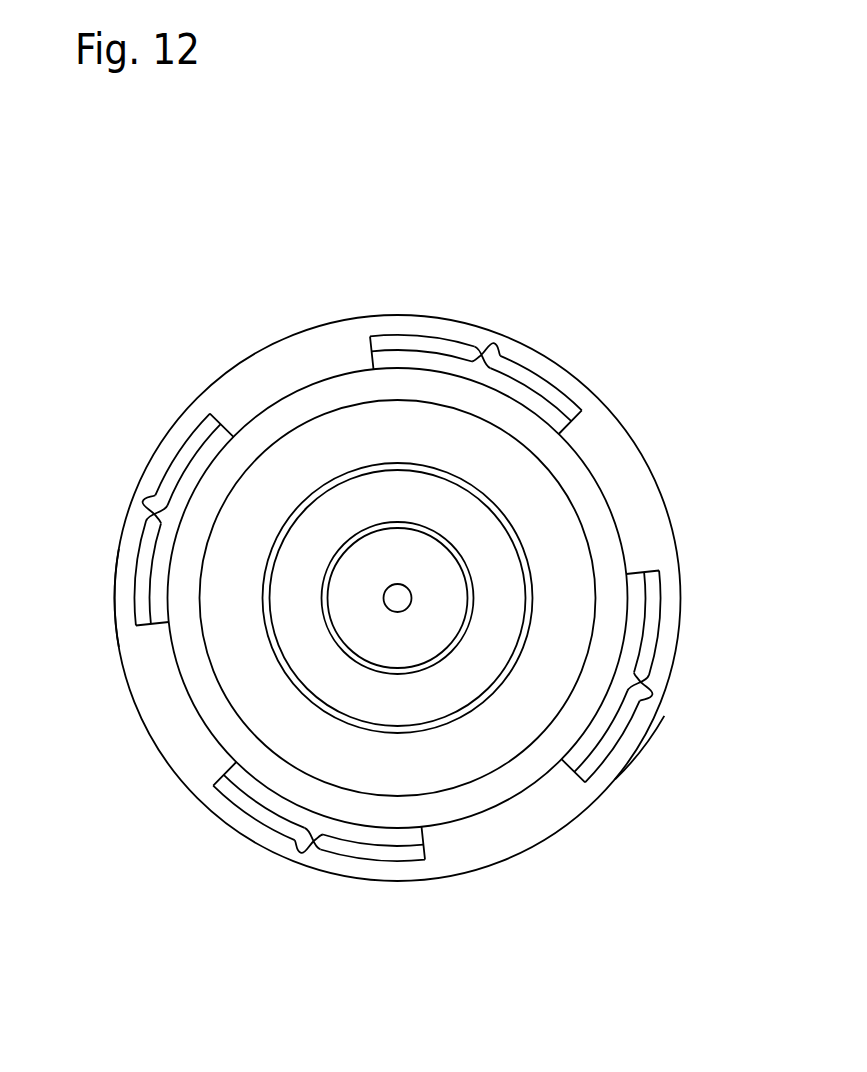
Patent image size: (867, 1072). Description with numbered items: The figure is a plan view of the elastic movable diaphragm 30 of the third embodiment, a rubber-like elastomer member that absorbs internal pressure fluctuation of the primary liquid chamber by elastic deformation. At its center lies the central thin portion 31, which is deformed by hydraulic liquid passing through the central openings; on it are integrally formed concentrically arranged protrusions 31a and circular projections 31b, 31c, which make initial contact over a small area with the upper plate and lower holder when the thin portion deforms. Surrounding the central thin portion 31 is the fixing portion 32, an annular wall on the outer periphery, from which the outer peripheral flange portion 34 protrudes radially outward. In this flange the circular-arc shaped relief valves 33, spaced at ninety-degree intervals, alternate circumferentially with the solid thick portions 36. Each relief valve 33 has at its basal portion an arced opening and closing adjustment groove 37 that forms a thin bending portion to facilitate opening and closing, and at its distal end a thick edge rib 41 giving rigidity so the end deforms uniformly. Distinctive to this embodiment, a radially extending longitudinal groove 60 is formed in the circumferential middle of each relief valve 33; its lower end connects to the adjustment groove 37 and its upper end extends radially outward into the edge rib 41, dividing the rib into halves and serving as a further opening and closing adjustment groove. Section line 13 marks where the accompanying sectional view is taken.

The elastic movable diaphragm 30 is at (118, 420).
The central thin portion 31 is at (335, 428).
The protrusions 31a is at (401, 597).
The circular projection 31b is at (463, 567).
The circular projection 31c is at (527, 565).
The fixing portion 32 is at (255, 413).
The relief valve 33 is at (560, 397).
The outer peripheral flange portion 34 is at (113, 585).
The solid thick portion 36 is at (220, 403).
The opening and closing adjustment groove 37 is at (527, 397).
The edge rib 41 is at (650, 722).
The longitudinal groove 60 is at (493, 350).
The line 13- 13 is at (700, 710).